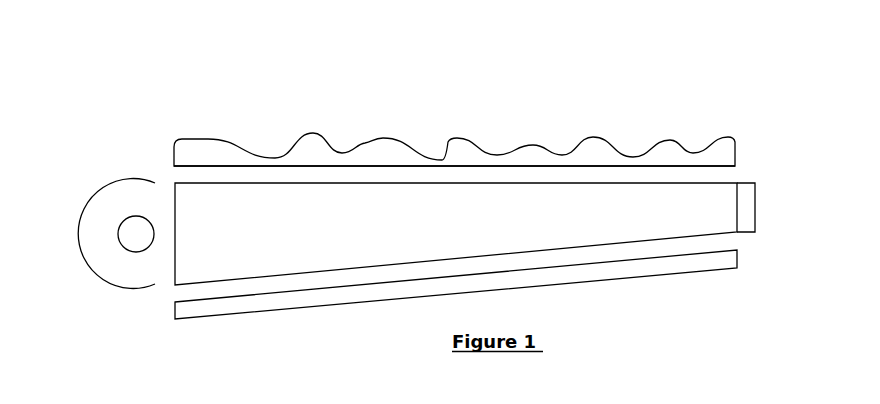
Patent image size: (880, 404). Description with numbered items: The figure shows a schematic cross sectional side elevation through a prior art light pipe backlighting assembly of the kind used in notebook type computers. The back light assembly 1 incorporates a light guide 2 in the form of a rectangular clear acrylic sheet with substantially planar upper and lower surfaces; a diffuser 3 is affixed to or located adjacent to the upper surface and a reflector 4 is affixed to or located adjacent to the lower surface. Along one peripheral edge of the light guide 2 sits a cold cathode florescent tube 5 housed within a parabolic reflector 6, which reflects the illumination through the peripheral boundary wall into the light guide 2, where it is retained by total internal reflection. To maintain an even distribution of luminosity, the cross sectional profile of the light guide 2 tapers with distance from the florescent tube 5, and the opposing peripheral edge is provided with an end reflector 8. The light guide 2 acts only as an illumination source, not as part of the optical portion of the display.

The back light assembly 1 is at (175, 334).
The light guide 2 is at (567, 182).
The diffuser 3 is at (193, 167).
The reflector 4 is at (175, 319).
The cold cathode florescent tube 5 is at (135, 233).
The parabolic reflector 6 is at (155, 183).
The end reflector 8 is at (738, 183).